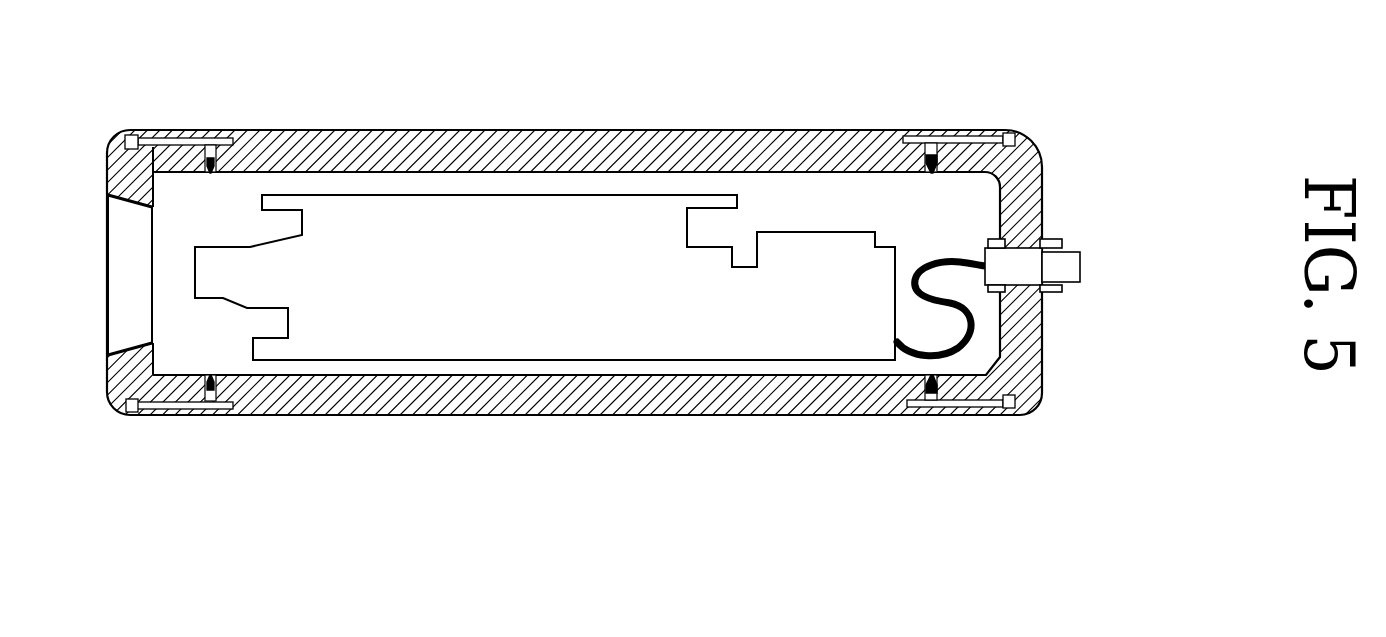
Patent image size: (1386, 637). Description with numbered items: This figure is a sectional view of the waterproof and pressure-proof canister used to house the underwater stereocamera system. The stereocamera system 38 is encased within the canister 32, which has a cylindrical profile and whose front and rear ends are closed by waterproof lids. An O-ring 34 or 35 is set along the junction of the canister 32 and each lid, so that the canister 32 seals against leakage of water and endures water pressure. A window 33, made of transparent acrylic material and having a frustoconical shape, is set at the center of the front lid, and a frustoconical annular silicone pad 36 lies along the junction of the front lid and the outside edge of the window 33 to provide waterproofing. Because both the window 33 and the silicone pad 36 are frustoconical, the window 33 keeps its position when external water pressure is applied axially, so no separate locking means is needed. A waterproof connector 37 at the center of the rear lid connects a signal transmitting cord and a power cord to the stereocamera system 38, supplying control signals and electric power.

The waterproof and pressure-proof canister 32 is at (525, 402).
The window 33 is at (128, 315).
The O-ring 34 is at (237, 147).
The O-ring 35 is at (928, 163).
The frustoconical annular silicone pad 36 is at (107, 160).
The waterproof connector 37 is at (1067, 268).
The stereocamera system 38 is at (817, 245).